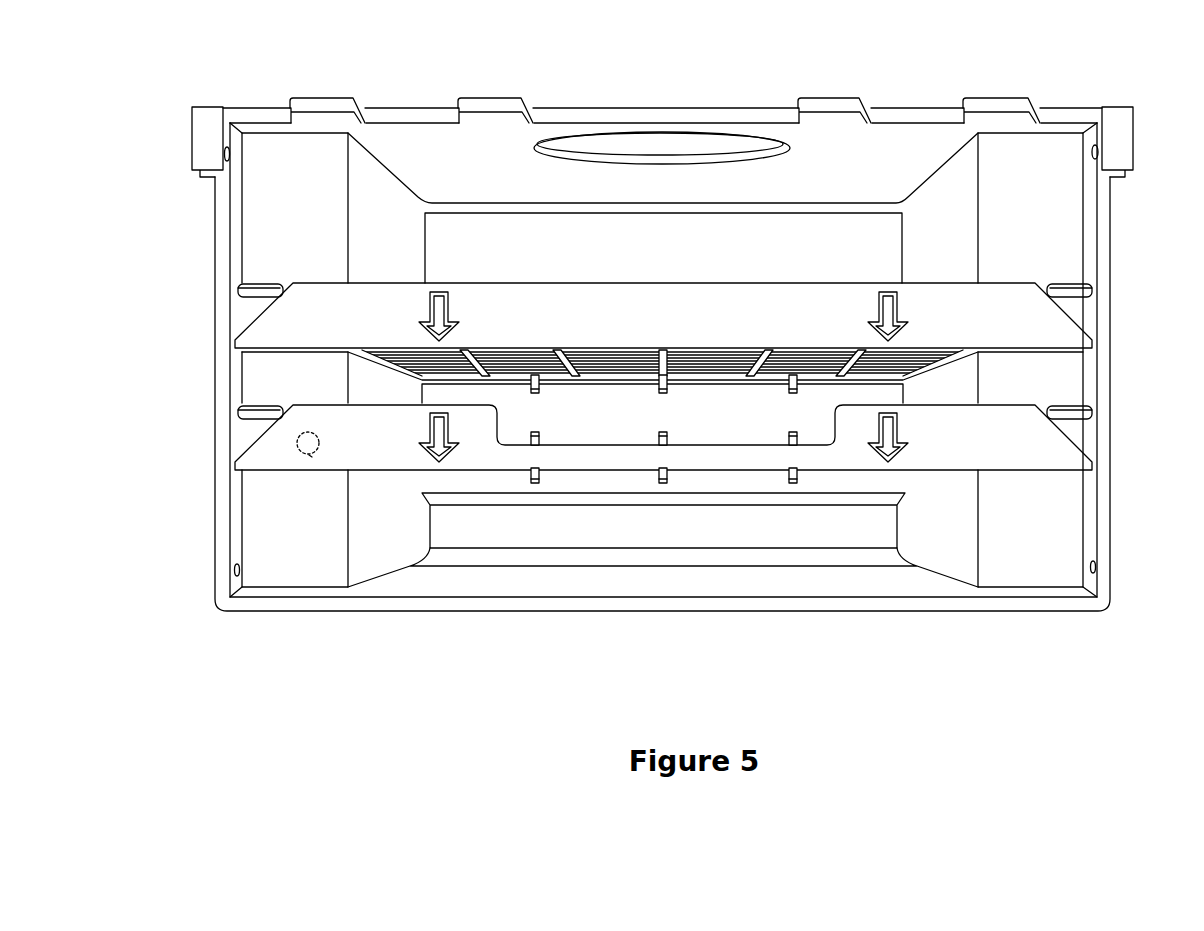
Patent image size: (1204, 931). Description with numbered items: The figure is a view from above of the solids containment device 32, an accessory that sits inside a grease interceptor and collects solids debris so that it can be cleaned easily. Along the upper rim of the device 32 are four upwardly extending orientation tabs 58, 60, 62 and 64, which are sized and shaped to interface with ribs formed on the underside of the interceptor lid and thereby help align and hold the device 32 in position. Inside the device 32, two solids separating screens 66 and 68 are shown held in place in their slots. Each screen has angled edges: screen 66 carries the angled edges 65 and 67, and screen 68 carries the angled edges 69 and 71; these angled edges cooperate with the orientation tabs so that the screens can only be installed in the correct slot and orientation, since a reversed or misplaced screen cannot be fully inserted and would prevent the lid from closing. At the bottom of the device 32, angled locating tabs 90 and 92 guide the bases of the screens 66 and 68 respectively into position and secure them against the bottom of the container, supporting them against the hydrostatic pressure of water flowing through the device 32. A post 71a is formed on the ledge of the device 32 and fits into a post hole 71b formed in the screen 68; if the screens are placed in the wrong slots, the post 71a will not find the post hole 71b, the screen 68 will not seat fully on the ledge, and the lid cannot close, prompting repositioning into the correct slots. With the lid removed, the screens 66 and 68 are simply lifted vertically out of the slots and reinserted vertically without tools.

The solids containment device 32 is at (495, 612).
The orientation tab 58 is at (1007, 105).
The orientation tab 60 is at (838, 105).
The orientation tab 62 is at (487, 105).
The orientation tab 64 is at (313, 105).
The angled edge 65 is at (1073, 314).
The solids separating screen 66 is at (664, 299).
The angled edge 67 is at (255, 318).
The solids separating screen 68 is at (661, 475).
The angled edge 69 is at (1073, 435).
The angled edge 71 is at (257, 438).
The post 71a is at (303, 452).
The post hole 71b is at (310, 455).
The locating tab 90 is at (795, 393).
The locating tab 92 is at (795, 483).